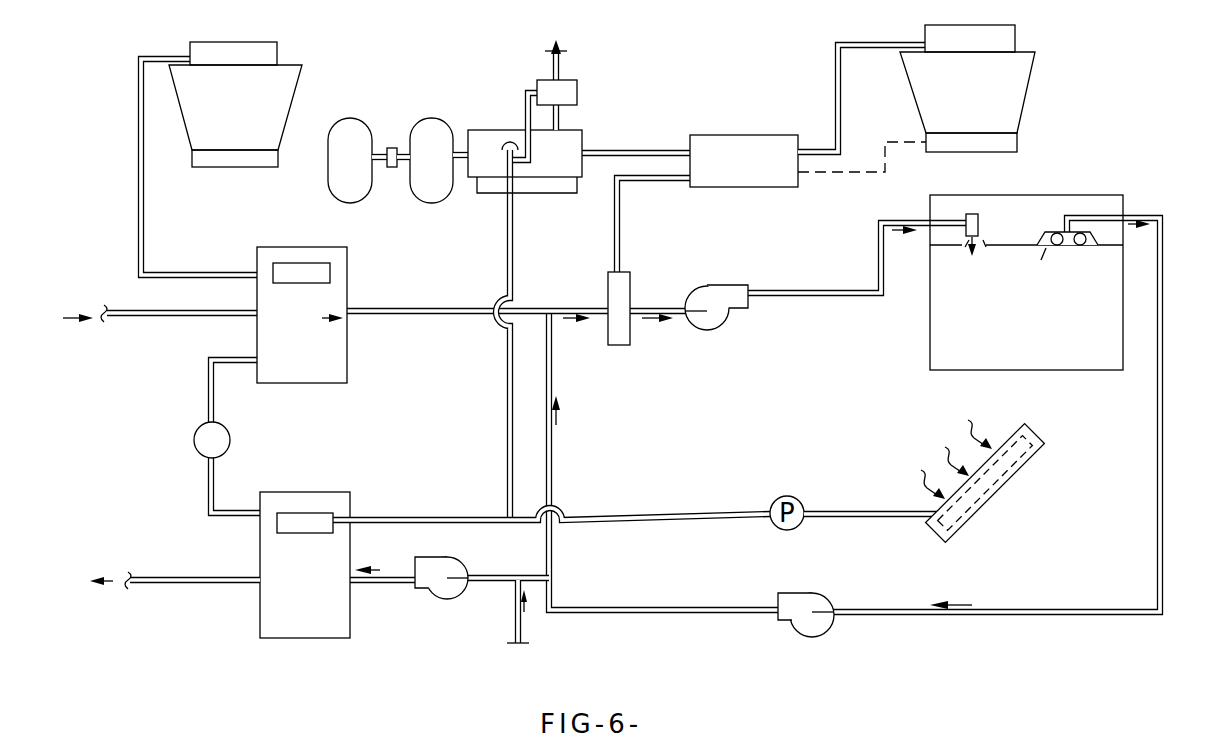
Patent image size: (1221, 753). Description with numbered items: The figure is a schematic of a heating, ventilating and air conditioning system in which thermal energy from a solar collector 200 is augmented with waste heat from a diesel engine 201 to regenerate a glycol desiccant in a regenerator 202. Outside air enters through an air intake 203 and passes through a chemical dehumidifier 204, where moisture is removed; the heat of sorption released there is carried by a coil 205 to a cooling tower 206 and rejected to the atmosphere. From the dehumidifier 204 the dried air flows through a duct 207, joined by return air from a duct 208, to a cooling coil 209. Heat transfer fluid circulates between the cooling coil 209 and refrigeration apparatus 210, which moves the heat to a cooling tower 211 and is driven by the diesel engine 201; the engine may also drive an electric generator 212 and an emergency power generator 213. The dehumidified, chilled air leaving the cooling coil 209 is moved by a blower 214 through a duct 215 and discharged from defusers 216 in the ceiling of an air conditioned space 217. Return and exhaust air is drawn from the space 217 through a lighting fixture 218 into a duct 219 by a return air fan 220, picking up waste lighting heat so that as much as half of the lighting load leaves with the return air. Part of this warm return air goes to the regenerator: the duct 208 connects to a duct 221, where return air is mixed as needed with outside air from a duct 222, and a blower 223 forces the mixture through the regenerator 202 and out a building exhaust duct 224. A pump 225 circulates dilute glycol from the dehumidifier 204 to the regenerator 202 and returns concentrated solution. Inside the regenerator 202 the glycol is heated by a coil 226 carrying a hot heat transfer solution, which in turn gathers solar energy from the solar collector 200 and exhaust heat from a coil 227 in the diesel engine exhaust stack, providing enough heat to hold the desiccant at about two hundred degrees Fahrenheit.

The solar collector 200 is at (1026, 470).
The diesel engine 201 is at (537, 190).
The regenerator 202 is at (350, 494).
The air intake 203 is at (114, 320).
The chemical dehumidifier 204 is at (257, 338).
The coil 205 is at (278, 282).
The cooling tower 206 is at (268, 42).
The duct 207 is at (522, 306).
The duct 208 is at (556, 365).
The cooling coil 209 is at (632, 282).
The refrigeration apparatus 210 is at (724, 138).
The cooling tower 211 is at (1034, 66).
The electric generator 212 is at (440, 126).
The emergency power generator 213 is at (350, 126).
The blower 214 is at (726, 286).
The duct 215 is at (808, 290).
The defusers 216 is at (982, 222).
The air conditioned space 217 is at (1080, 196).
The lighting fixture 218 is at (1062, 250).
The duct 219 is at (1160, 258).
The return air fan 220 is at (822, 596).
The duct 221 is at (476, 578).
The duct 222 is at (514, 625).
The blower 223 is at (432, 558).
The building exhaust duct 224 is at (185, 576).
The pump 225 is at (196, 430).
The coil 226 is at (278, 538).
The coil 227 is at (580, 94).